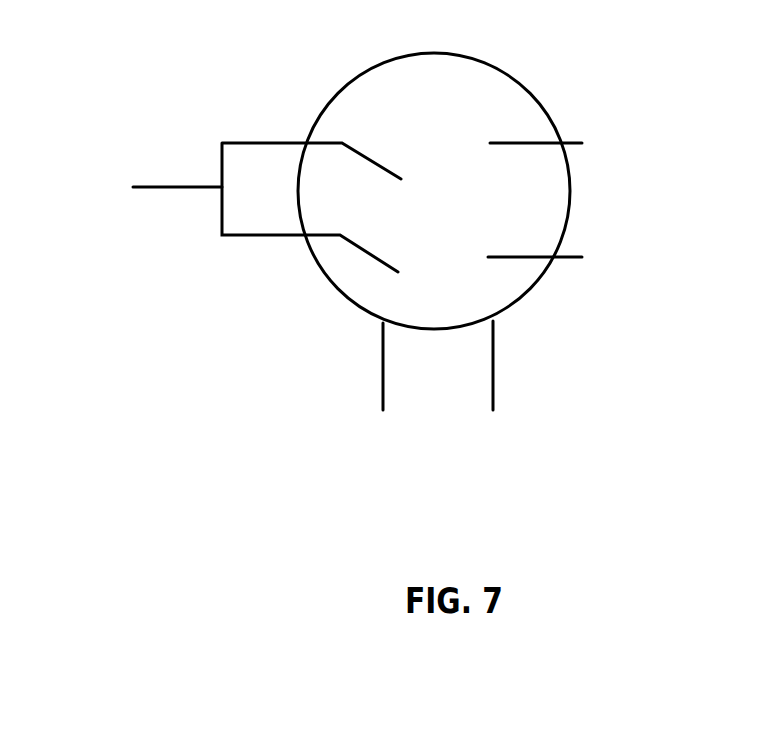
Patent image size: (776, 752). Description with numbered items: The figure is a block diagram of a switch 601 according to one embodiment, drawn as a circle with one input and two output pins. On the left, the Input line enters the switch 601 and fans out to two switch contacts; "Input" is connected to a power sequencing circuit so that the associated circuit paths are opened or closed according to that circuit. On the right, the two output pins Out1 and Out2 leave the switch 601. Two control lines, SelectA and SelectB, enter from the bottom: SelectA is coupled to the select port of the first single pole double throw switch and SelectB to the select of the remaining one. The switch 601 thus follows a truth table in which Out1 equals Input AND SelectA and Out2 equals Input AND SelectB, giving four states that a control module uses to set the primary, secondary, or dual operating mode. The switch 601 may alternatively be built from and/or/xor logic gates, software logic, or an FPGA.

The switch 601 is at (712, 51).
The element Input is at (142, 180).
The element Out1 is at (569, 146).
The element Out2 is at (568, 260).
The element SelectA is at (375, 383).
The element SelectB is at (503, 382).